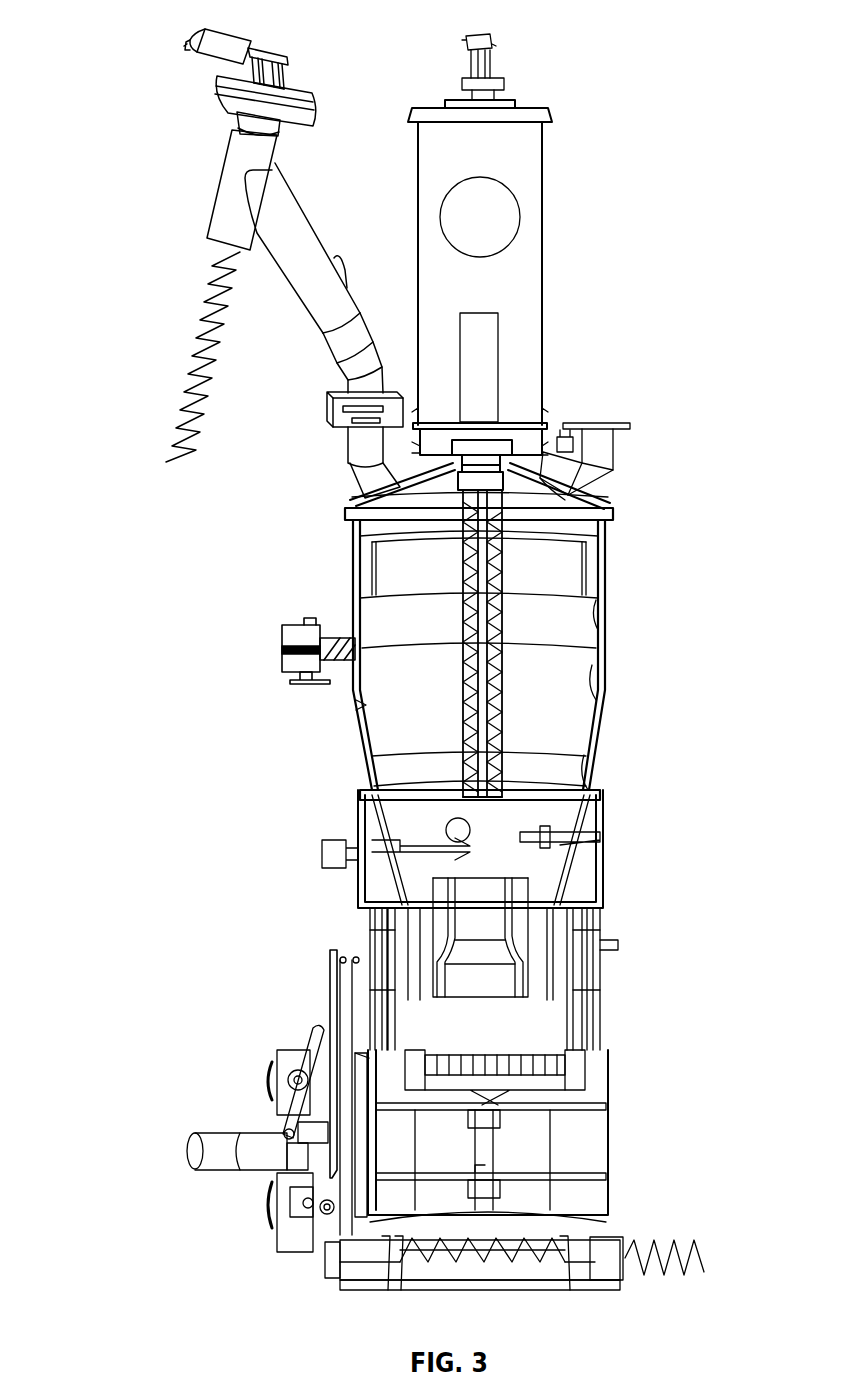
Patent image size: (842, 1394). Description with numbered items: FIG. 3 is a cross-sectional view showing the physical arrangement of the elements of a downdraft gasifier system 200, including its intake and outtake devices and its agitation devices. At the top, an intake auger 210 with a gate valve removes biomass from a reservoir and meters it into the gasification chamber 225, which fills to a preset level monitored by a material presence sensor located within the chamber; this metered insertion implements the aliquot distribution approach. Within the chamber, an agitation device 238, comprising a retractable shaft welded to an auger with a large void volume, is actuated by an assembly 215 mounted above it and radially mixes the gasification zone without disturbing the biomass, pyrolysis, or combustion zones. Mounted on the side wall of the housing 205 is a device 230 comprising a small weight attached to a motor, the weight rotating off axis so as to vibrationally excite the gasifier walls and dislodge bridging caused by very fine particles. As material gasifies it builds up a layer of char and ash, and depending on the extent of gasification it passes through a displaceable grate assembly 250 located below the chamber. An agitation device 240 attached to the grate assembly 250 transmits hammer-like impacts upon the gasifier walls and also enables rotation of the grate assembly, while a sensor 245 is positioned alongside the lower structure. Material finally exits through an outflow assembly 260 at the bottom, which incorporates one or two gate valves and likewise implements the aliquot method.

The downdraft gasifier system 200 is at (414, 660).
The grinding chamber housing 205 is at (354, 556).
The intake auger 210 is at (184, 410).
The assembly 215 is at (519, 222).
The gasification chamber 225 is at (578, 624).
The device 230 is at (282, 662).
The agitation device 238 is at (505, 690).
The agitation device 240 is at (268, 1126).
The sensor 245 is at (562, 920).
The displaceable grate assembly 250 is at (542, 1064).
The outflow assembly 260 is at (670, 1272).